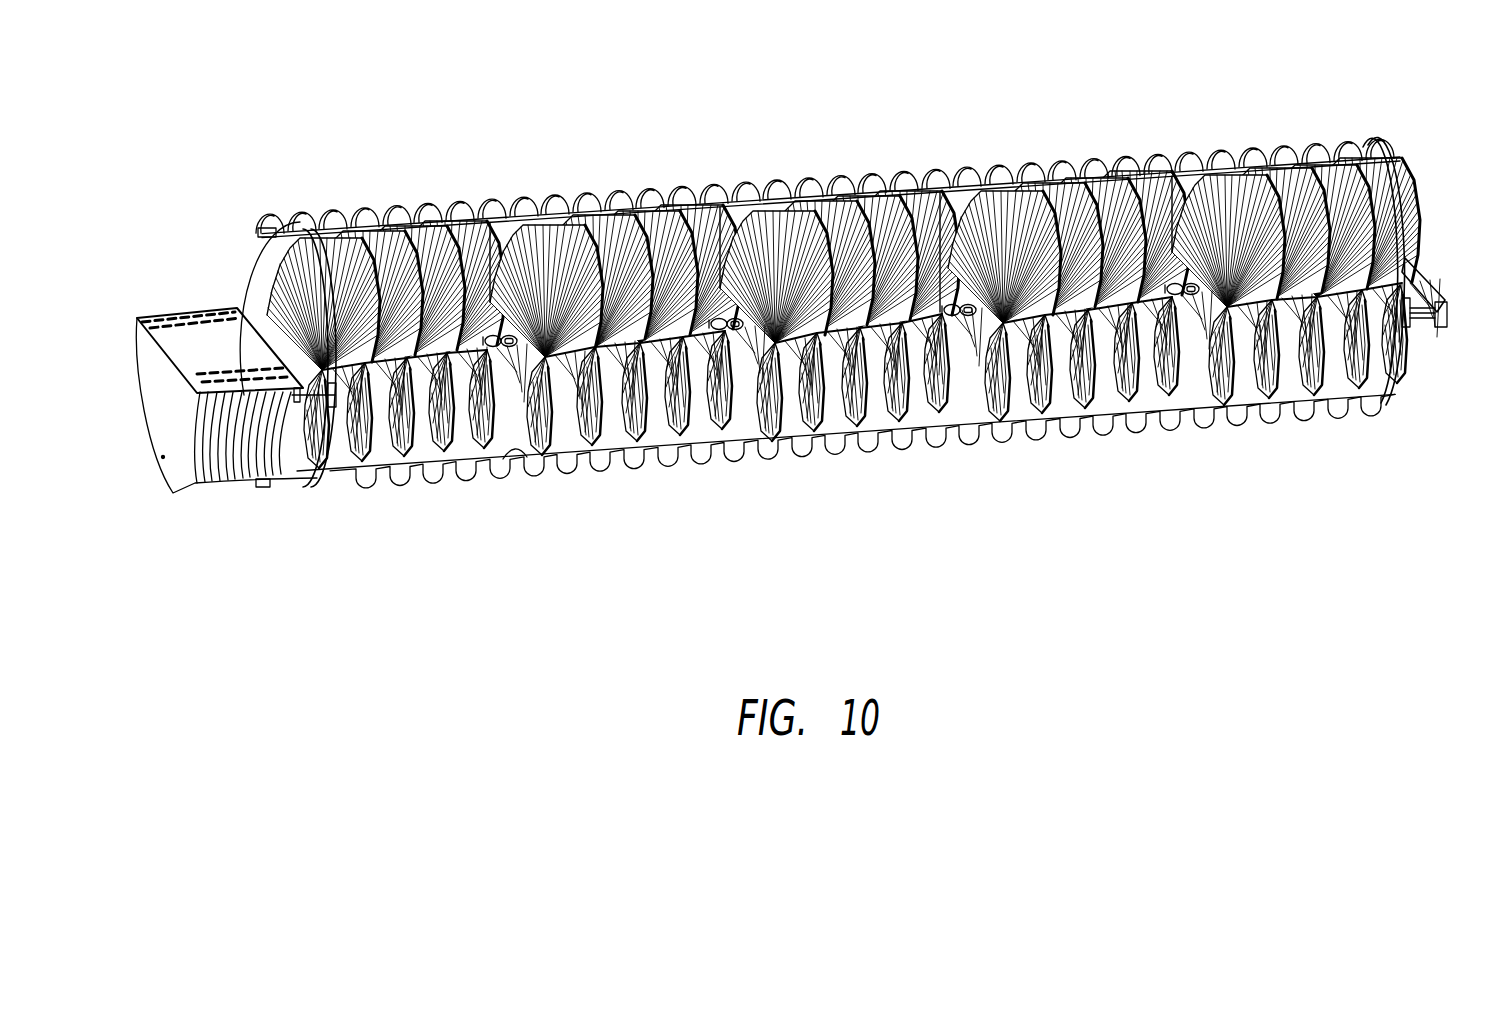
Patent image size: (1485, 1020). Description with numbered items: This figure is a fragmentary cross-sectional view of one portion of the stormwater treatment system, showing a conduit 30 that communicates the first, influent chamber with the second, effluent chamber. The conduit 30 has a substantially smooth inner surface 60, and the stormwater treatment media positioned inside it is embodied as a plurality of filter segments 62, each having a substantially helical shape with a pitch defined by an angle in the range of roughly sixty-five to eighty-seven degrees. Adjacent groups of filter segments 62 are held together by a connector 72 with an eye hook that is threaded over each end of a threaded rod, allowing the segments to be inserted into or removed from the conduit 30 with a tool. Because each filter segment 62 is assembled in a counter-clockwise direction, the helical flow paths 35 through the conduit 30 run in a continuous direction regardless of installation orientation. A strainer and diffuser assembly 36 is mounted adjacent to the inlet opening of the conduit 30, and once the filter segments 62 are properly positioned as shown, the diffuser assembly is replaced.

The conduit 30 is at (876, 126).
The helical flow paths 35 is at (377, 458).
The strainer and diffuser assembly 36 is at (207, 345).
The inner surface 60 is at (523, 462).
The filter segments 62 is at (464, 432).
The connector 72 is at (748, 203).